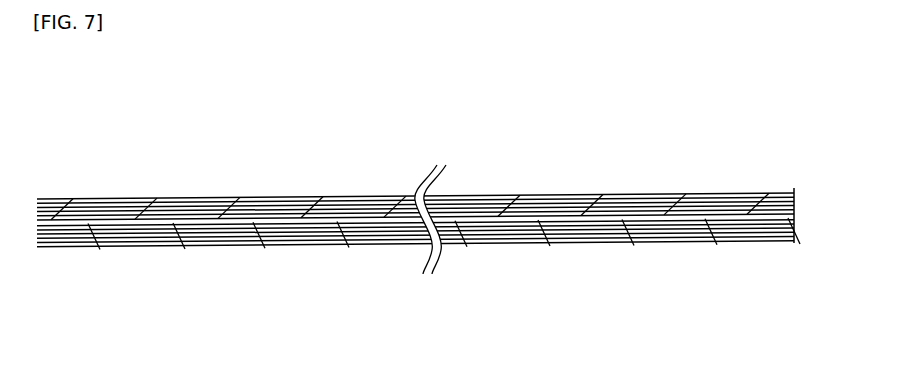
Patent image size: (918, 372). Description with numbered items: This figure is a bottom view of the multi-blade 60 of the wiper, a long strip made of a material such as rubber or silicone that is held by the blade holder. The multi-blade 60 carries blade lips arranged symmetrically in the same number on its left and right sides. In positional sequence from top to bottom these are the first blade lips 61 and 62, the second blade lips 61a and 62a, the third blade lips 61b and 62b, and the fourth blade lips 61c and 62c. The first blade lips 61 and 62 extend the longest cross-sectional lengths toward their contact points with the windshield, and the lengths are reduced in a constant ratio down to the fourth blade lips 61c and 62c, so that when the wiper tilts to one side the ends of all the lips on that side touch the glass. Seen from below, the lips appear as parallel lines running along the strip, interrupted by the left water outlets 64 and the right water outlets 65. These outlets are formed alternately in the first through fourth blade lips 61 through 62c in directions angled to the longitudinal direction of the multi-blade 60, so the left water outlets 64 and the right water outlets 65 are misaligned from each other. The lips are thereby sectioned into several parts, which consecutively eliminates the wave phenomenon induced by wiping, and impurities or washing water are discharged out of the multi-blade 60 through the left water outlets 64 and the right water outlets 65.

The multi-blade 60 is at (361, 170).
The first blade lip 61 is at (468, 165).
The second blade lip 61a is at (757, 206).
The third blade lip 61b is at (796, 197).
The fourth blade lip 61c is at (797, 211).
The first blade lip 62 is at (464, 281).
The second blade lip 62a is at (770, 242).
The third blade lip 62b is at (787, 243).
The fourth blade lip 62c is at (797, 223).
The left water outlets 64 is at (78, 200).
The right water outlets 65 is at (181, 247).